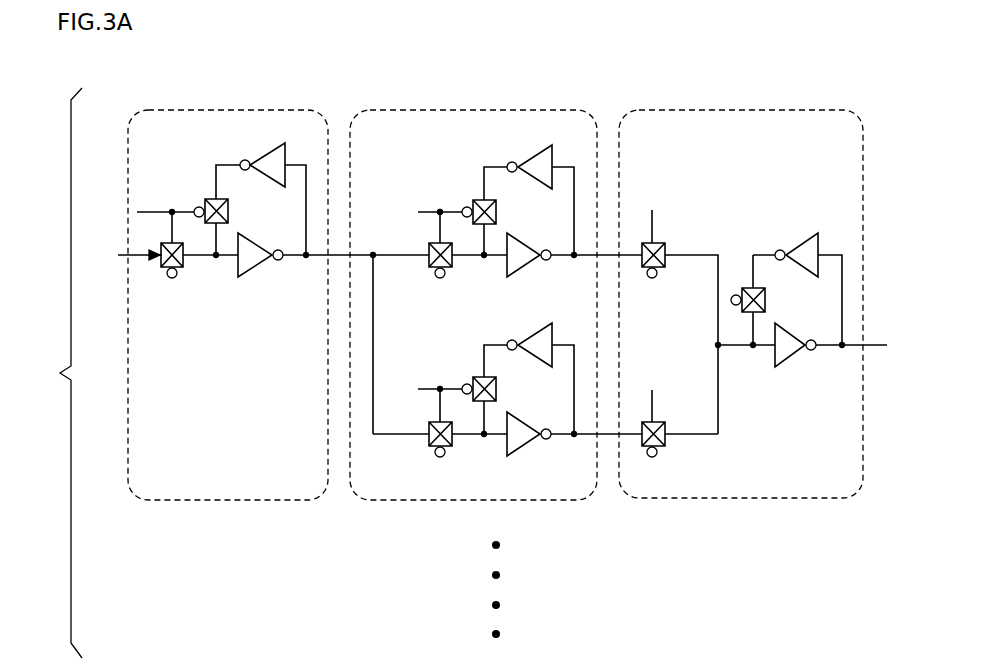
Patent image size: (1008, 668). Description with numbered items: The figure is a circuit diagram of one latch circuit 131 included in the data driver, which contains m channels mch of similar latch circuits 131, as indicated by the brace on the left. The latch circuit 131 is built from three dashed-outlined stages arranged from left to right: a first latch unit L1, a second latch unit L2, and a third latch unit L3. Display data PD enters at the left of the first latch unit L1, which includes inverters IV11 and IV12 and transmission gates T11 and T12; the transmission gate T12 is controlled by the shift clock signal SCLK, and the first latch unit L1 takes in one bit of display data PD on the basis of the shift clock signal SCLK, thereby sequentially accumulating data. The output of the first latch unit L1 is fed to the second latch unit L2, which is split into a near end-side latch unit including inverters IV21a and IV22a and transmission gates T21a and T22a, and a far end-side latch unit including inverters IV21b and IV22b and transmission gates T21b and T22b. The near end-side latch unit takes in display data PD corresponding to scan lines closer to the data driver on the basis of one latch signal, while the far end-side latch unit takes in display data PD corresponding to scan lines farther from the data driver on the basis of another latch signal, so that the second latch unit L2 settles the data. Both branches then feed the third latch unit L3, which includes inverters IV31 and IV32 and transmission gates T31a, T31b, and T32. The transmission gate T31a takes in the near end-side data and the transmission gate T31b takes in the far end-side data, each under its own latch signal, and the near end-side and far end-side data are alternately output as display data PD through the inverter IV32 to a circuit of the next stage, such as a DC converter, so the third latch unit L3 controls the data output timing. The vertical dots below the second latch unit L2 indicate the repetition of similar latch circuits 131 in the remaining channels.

The latch circuit 131 is at (778, 68).
The m channels mch is at (43, 373).
The first latch unit L1 is at (304, 110).
The second latch unit L2 is at (570, 115).
The third latch unit L3 is at (837, 112).
The display data PD is at (257, 255).
The shift clock signal SCLK is at (166, 213).
The transmission gate T11 is at (229, 210).
The transmission gate T12 is at (184, 270).
The inverter IV11 is at (270, 156).
The inverter IV12 is at (258, 272).
The transmission gate T21a is at (497, 211).
The transmission gate T22a is at (435, 272).
The inverter IV21a is at (530, 156).
The inverter IV22a is at (526, 272).
The transmission gate T21b is at (497, 388).
The transmission gate T22b is at (435, 451).
The inverter IV21b is at (525, 338).
The inverter IV22b is at (526, 451).
The transmission gate T31a is at (666, 270).
The transmission gate T31b is at (666, 449).
The transmission gate T32 is at (766, 298).
The inverter IV31 is at (802, 246).
The inverter IV32 is at (792, 364).